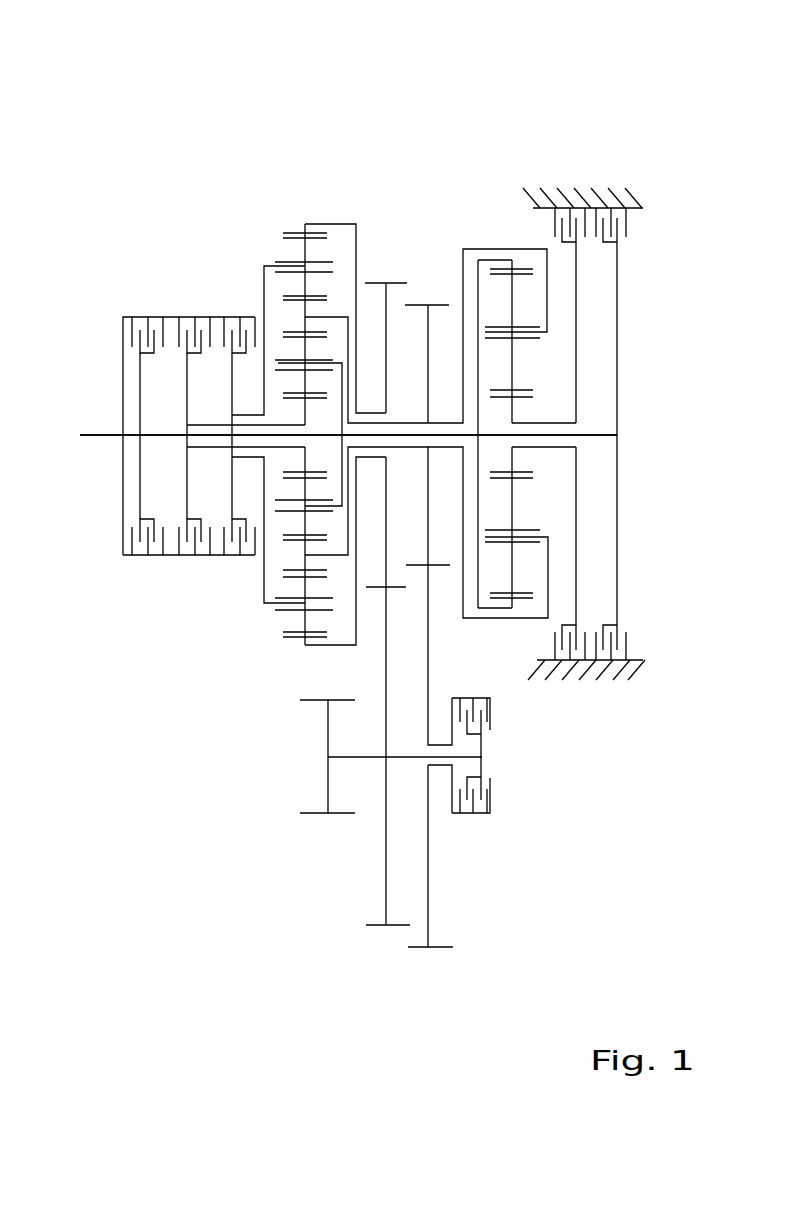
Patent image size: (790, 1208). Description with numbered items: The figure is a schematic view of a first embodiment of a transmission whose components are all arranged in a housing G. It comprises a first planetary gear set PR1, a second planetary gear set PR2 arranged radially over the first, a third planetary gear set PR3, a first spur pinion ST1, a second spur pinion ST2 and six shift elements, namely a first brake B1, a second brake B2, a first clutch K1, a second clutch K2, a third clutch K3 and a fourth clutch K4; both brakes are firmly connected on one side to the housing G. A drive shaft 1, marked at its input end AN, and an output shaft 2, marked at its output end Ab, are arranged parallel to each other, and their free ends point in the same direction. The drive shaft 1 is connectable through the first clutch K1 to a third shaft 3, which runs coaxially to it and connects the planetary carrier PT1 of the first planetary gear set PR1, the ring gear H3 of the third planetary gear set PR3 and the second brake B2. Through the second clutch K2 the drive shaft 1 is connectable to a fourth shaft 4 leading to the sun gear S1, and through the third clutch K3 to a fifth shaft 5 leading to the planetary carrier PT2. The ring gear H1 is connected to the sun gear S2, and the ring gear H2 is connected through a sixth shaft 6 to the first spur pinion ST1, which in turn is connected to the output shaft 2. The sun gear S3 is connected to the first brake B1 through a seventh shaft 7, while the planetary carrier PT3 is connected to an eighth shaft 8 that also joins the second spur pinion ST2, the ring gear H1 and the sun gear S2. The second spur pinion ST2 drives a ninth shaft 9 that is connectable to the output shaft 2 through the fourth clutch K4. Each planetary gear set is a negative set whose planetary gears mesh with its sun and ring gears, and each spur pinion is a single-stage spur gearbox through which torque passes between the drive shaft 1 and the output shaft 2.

The drive shaft 1 is at (108, 440).
The output shaft 2 is at (368, 758).
The third shaft 3 is at (140, 360).
The fourth shaft 4 is at (185, 382).
The fifth shaft 5 is at (231, 401).
The sixth shaft 6 is at (348, 222).
The seventh shaft 7 is at (577, 398).
The eighth shaft 8 is at (478, 248).
The ninth shaft 9 is at (440, 768).
The input shaft AN is at (110, 437).
The output shaft Ab is at (325, 780).
The first clutch K1 is at (145, 305).
The second clutch K2 is at (190, 305).
The third clutch K3 is at (238, 305).
The fourth clutch K4 is at (472, 823).
The first brake B1 is at (568, 205).
The second brake B2 is at (607, 205).
The housing G is at (605, 198).
The first planetary gear set PR1 is at (282, 350).
The second planetary gear set PR2 is at (305, 197).
The third planetary gear set PR3 is at (511, 235).
The sun gear of the first planetary gear set S1 is at (297, 477).
The sun gear of the second planetary gear set S2 is at (297, 577).
The sun gear of the third planetary gear set S3 is at (517, 388).
The planetary carrier of the first planetary gear set PT1 is at (297, 512).
The planetary carrier of the second planetary gear set PT2 is at (297, 612).
The planetary carrier of the third planetary gear set PT3 is at (513, 323).
The ring gear of the first planetary gear set H1 is at (297, 540).
The ring gear of the second planetary gear set H2 is at (297, 640).
The ring gear of the third planetary gear set H3 is at (522, 268).
The first spur pinion ST1 is at (385, 255).
The second spur pinion ST2 is at (426, 280).